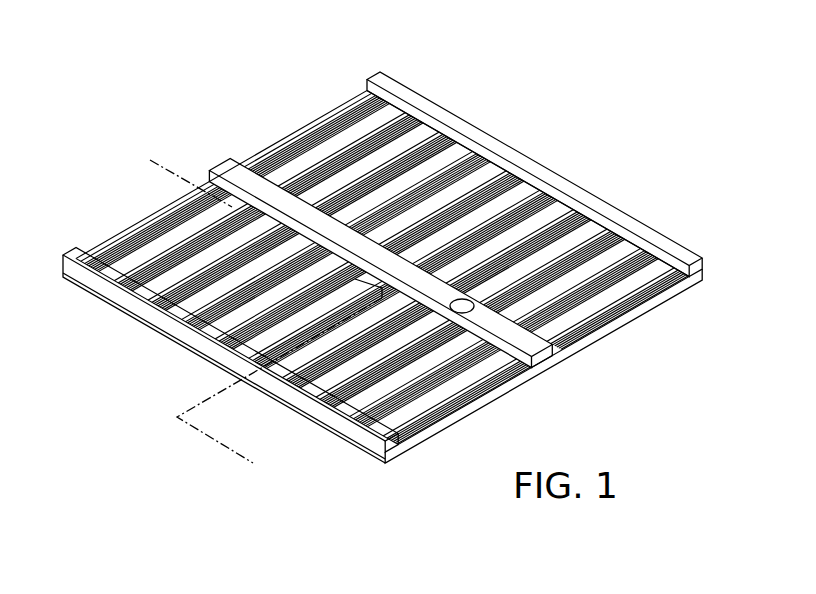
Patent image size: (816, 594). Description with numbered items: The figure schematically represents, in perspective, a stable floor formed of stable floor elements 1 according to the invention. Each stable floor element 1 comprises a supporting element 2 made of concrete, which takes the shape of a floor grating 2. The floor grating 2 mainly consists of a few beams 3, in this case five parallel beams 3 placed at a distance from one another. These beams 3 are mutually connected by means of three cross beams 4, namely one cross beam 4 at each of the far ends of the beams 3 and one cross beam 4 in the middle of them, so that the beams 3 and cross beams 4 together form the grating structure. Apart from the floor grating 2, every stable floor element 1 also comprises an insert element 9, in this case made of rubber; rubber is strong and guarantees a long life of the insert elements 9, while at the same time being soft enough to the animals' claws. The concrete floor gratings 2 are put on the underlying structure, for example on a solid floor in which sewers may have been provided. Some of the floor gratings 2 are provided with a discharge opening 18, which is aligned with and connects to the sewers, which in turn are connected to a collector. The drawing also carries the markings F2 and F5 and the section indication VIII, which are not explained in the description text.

The stable floor element 1 is at (522, 126).
The supporting element 2 is at (558, 183).
The beams 3 is at (313, 193).
The cross beams 4 is at (390, 83).
The insert element 9 is at (308, 163).
The discharge opening 18 is at (463, 299).
The force F2 is at (153, 326).
The force F5 is at (155, 241).
The section line VIII is at (176, 172).